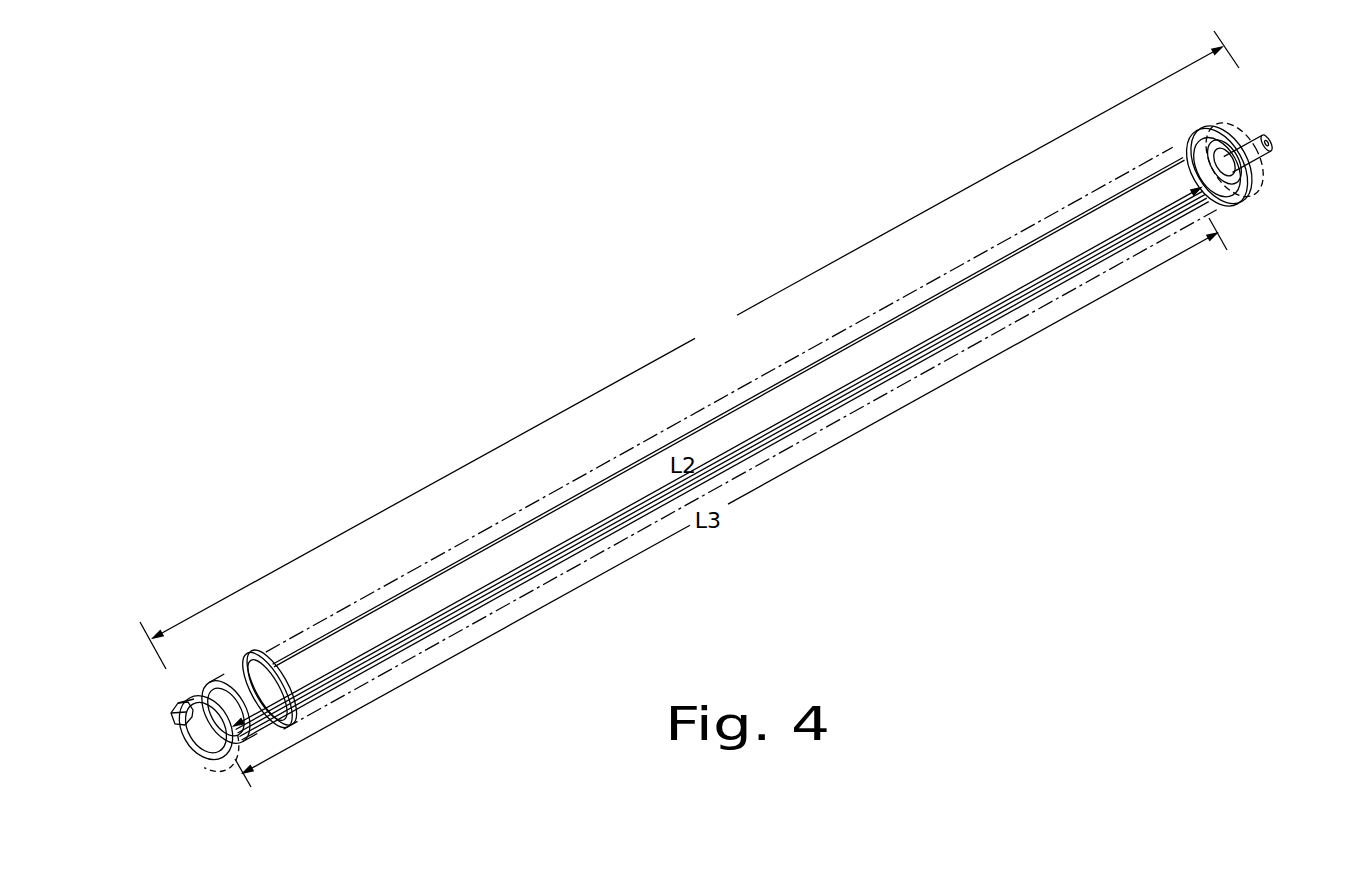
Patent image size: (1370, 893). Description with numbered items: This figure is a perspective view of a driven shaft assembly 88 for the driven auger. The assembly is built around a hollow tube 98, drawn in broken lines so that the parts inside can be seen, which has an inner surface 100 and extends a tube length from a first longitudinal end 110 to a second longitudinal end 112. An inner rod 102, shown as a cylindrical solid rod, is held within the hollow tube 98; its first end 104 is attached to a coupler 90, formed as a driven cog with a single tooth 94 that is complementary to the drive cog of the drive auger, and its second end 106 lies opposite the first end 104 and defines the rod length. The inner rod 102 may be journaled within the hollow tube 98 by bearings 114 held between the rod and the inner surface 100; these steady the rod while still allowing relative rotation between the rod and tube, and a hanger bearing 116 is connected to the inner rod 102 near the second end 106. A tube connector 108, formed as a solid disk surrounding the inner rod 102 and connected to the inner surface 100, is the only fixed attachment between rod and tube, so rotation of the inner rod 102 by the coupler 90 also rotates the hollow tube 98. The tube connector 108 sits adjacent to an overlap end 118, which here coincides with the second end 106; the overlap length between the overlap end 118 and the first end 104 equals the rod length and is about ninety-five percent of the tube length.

The driven shaft assembly 88 is at (598, 444).
The coupler 90 is at (184, 749).
The single tooth 94 is at (174, 705).
The hollow tube 98 is at (463, 541).
The inner surface 100 is at (1237, 124).
The inner rod 102 is at (720, 462).
The first end 104 is at (206, 762).
The second end 106 is at (1185, 140).
The tube connector 108 is at (1218, 202).
The first longitudinal end 110 is at (212, 686).
The second longitudinal end 112 is at (1266, 180).
The bearings 114 is at (272, 650).
The hanger bearing 116 is at (1246, 182).
The overlap end 118 is at (1183, 195).